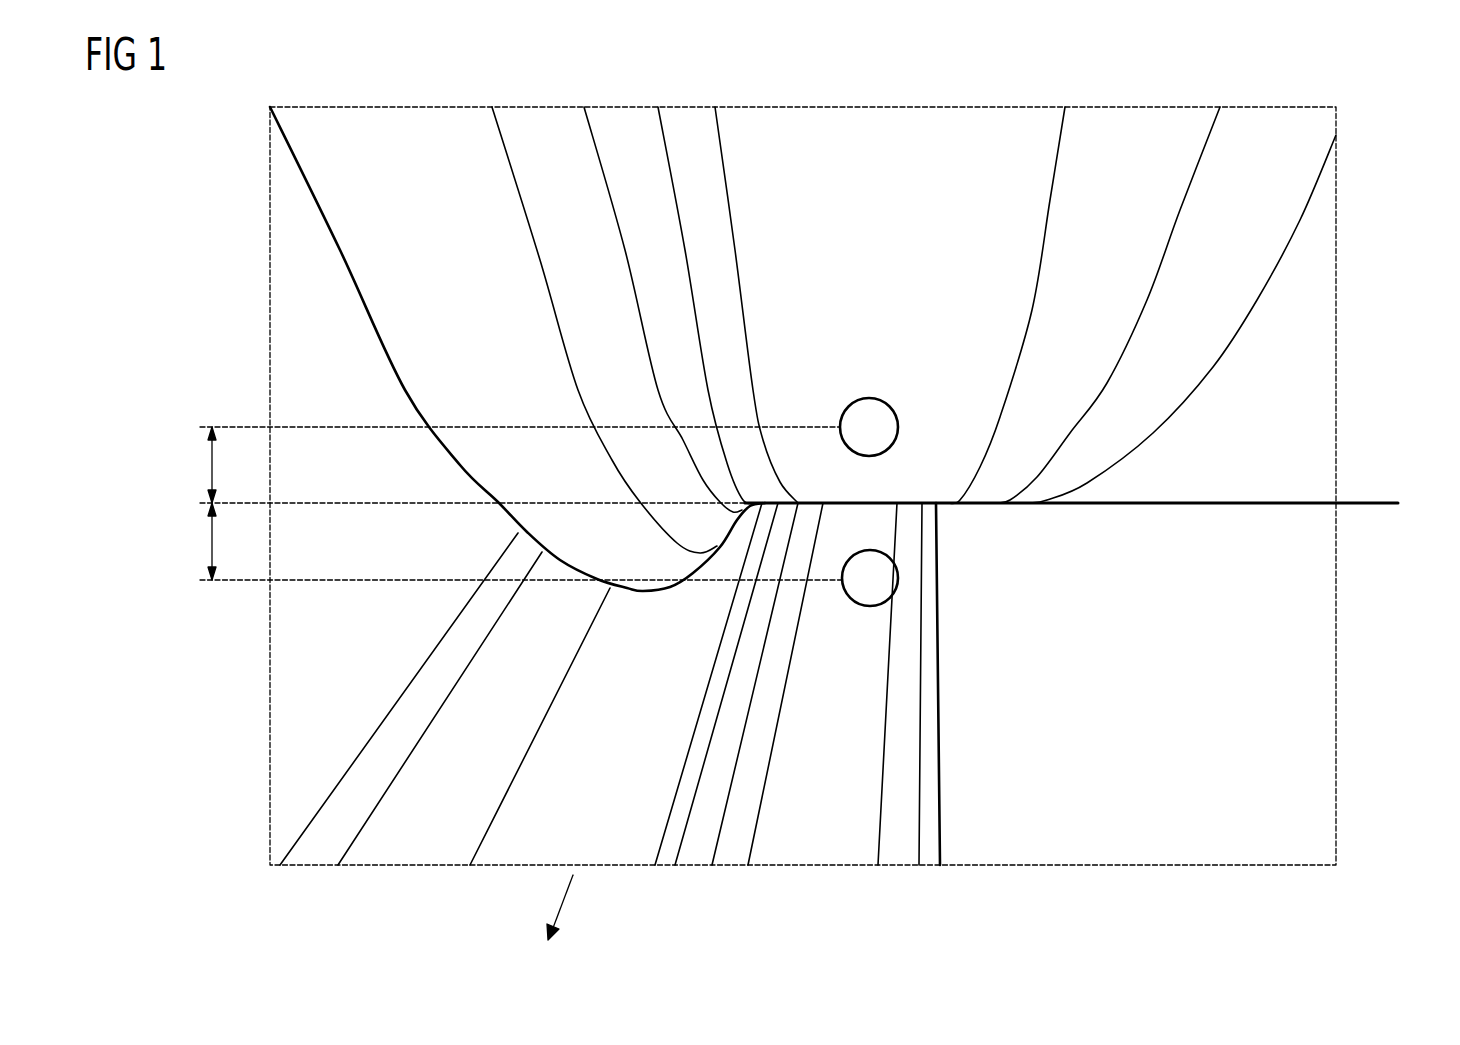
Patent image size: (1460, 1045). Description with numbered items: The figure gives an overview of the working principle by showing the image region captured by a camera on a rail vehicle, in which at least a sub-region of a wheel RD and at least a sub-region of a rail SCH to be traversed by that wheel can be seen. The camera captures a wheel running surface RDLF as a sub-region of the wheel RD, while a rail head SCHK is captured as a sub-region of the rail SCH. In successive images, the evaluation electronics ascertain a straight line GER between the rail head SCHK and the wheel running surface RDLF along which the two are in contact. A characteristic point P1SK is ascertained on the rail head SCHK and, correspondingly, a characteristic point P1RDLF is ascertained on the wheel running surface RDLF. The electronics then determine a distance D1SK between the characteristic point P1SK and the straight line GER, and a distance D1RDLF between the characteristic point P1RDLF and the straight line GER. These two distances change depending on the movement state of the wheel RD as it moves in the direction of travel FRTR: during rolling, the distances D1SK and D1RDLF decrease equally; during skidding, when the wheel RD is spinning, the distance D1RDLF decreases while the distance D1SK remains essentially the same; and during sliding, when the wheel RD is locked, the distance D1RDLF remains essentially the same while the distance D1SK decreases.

The wheel running surface RDLF is at (906, 185).
The wheel RD is at (1141, 135).
The straight line GER is at (1096, 503).
The characteristic point on the wheel running surface P1RDLF is at (868, 398).
The distance between characteristic point P1RDLF and straight line GER D1RDLF is at (479, 465).
The distance between characteristic point P1SK and straight line GER D1SK is at (492, 541).
The characteristic point on the rail head P1SK is at (898, 578).
The rail head SCHK is at (872, 720).
The rail SCH is at (955, 848).
The direction of travel FRTR is at (562, 900).